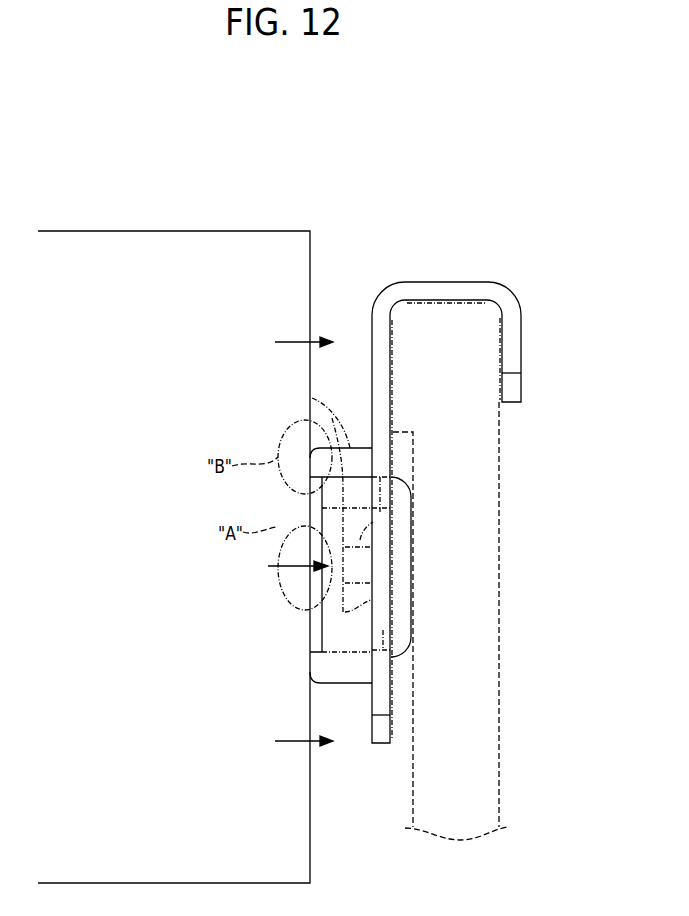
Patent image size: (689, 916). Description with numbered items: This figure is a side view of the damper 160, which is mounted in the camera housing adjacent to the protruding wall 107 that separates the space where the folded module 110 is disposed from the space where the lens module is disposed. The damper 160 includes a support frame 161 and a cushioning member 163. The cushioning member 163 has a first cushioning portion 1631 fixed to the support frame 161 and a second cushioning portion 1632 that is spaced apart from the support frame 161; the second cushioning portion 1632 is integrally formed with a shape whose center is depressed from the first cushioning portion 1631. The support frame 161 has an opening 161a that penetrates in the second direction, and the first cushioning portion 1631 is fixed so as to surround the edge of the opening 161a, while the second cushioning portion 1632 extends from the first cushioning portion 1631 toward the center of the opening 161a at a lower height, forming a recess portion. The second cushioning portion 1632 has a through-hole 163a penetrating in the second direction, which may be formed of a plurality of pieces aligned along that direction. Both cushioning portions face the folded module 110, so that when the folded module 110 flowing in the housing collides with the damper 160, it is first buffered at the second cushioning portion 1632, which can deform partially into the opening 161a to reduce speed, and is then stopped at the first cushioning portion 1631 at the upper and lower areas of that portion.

The folded module 110 is at (130, 220).
The damper 160 is at (456, 268).
The support frame 161 is at (372, 340).
The opening 161a is at (385, 515).
The cushioning member 163 is at (100, 394).
The first cushioning portion 1631 is at (312, 398).
The second cushioning portion 1632 is at (320, 520).
The through-hole 163a is at (362, 615).
The protruding wall 107 is at (500, 602).